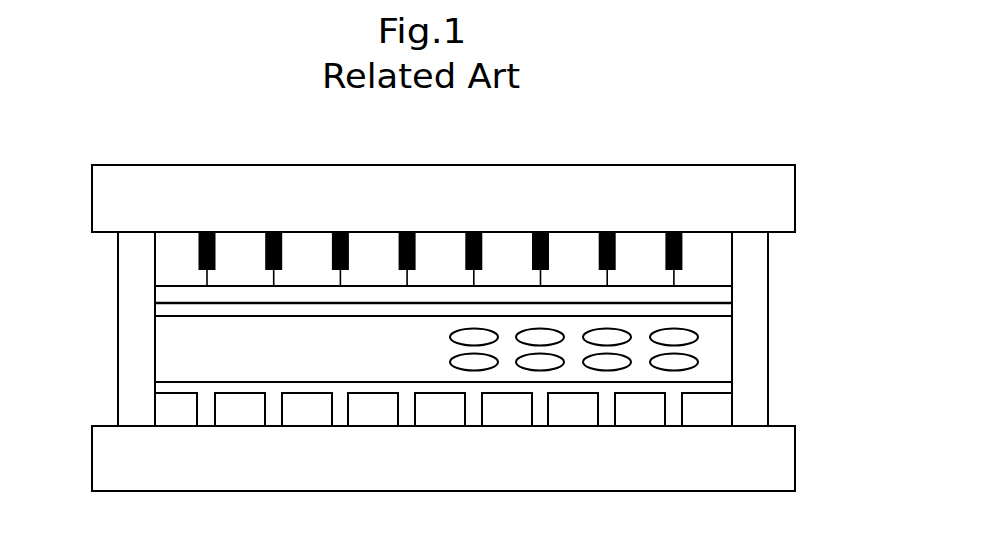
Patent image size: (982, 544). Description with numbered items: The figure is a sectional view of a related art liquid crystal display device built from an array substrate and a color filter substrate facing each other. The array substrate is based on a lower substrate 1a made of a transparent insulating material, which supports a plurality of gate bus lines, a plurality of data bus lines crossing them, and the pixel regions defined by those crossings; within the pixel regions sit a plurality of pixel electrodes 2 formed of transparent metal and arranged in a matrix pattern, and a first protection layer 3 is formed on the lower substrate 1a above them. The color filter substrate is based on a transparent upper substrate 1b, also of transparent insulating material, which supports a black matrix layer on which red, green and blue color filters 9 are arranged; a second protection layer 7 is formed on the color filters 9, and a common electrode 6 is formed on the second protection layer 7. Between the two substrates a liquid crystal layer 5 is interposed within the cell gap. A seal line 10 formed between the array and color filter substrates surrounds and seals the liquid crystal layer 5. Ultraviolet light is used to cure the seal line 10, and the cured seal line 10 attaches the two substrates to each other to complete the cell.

The lower substrate 1a is at (778, 462).
The upper substrate 1b is at (778, 198).
The pixel electrodes 2 is at (163, 408).
The first protection layer 3 is at (723, 388).
The liquid crystal layer 5 is at (723, 350).
The common electrode 6 is at (165, 310).
The second protection layer 7 is at (723, 295).
The color filters 9 is at (723, 263).
The seal line 10 is at (135, 357).